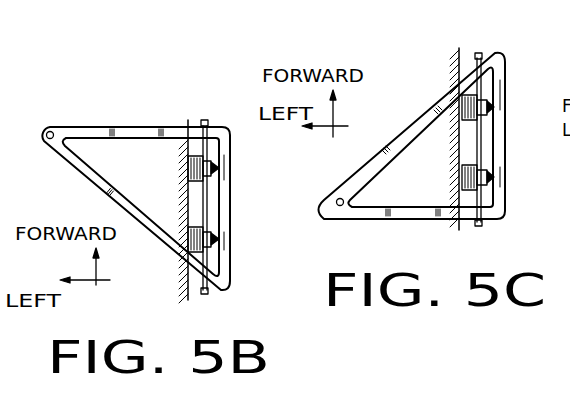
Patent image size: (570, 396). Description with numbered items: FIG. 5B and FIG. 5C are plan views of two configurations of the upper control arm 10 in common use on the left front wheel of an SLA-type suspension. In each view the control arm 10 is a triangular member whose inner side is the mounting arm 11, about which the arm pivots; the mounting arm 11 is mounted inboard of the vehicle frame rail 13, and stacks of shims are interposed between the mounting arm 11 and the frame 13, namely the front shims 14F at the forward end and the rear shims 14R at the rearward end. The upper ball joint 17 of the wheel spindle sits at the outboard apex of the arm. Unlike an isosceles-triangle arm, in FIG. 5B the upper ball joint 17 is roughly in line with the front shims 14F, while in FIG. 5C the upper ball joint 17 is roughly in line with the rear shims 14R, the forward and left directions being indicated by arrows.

In FIG. 5B, the upper control arm 10 is at (90, 131).
In FIG. 5C, the upper control arm 10 is at (410, 130).
In FIG. 5B, the mounting arm 11 is at (207, 294).
In FIG. 5C, the mounting arm 11 is at (480, 226).
In FIG. 5B, the vehicle frame 13 is at (190, 122).
In FIG. 5C, the vehicle frame 13 is at (458, 65).
In FIG. 5B, the front shims 14F is at (194, 181).
In FIG. 5C, the front shims 14F is at (494, 107).
In FIG. 5B, the rear shims 14R is at (204, 251).
In FIG. 5C, the rear shims 14R is at (478, 168).
In FIG. 5B, the upper ball joint 17 is at (45, 132).
In FIG. 5C, the upper ball joint 17 is at (338, 199).